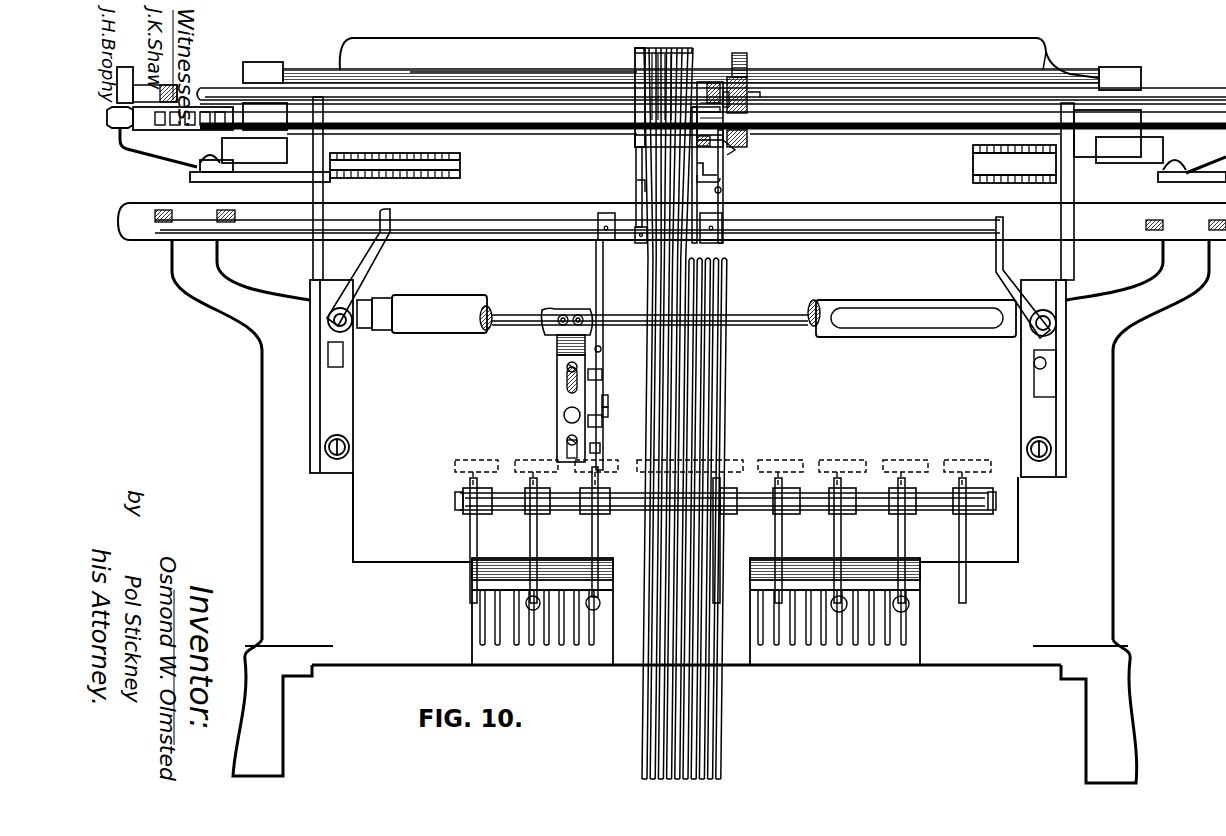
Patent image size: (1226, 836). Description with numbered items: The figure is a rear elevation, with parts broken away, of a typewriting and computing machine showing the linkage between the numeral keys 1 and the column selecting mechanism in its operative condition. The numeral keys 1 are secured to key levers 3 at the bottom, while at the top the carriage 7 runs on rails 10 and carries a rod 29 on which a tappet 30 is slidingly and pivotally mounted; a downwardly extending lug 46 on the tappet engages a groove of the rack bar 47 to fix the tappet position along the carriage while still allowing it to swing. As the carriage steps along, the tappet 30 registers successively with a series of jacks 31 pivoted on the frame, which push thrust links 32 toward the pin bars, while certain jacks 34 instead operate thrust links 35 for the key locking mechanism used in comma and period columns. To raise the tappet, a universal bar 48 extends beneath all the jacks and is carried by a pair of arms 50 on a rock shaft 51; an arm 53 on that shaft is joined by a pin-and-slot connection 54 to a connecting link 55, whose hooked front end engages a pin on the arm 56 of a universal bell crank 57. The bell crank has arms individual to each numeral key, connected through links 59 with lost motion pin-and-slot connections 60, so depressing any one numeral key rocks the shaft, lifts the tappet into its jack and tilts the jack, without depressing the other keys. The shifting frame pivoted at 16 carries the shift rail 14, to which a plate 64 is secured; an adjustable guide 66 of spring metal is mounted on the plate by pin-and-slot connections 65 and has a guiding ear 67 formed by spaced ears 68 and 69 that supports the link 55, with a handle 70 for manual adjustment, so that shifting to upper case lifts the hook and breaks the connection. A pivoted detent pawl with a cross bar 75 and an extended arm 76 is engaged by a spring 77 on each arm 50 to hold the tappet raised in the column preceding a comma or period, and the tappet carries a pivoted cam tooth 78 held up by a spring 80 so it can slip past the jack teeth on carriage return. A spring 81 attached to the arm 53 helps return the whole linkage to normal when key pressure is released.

The numeral keys 1 is at (470, 465).
The key levers 3 is at (530, 634).
The carriage 7 is at (368, 53).
The rails 10 is at (285, 227).
The shift rail 14 is at (768, 320).
The pivot of shifting frame 16 is at (423, 321).
The rod 29 is at (802, 100).
The tappet 30 is at (712, 82).
The jacks 31 is at (668, 62).
The thrust links 32 is at (670, 709).
The jacks for locking mechanism 34 is at (658, 46).
The thrust links 35 is at (700, 755).
The lug 46 is at (701, 115).
The rack bar 47 is at (210, 128).
The universal bar 48 is at (708, 156).
The arms 50 is at (637, 186).
The rock shaft 51 is at (525, 225).
The arm 53 is at (603, 292).
The pin-and-slot connection 54 is at (602, 374).
The connecting link 55 is at (590, 398).
The arm of universal bell crank 56 is at (600, 448).
The universal bell crank 57 is at (597, 493).
The links 59 is at (533, 538).
The pin-and-slot connections 60 is at (460, 500).
The plate 64 is at (557, 343).
The pin-and-slot connections 65 is at (566, 368).
The adjustable guide 66 is at (560, 379).
The guiding ear 67 is at (608, 398).
The ear 68 is at (608, 412).
The ear 69 is at (604, 427).
The handle 70 is at (565, 418).
The cross bar 75 is at (749, 147).
The arm of pawl 76 is at (722, 190).
The spring 77 is at (748, 93).
The cam tooth 78 is at (738, 56).
The spring 80 is at (748, 100).
The spring 81 is at (602, 350).